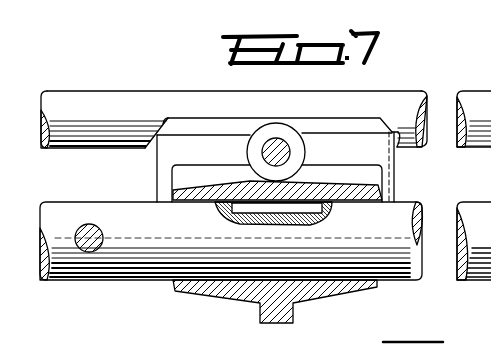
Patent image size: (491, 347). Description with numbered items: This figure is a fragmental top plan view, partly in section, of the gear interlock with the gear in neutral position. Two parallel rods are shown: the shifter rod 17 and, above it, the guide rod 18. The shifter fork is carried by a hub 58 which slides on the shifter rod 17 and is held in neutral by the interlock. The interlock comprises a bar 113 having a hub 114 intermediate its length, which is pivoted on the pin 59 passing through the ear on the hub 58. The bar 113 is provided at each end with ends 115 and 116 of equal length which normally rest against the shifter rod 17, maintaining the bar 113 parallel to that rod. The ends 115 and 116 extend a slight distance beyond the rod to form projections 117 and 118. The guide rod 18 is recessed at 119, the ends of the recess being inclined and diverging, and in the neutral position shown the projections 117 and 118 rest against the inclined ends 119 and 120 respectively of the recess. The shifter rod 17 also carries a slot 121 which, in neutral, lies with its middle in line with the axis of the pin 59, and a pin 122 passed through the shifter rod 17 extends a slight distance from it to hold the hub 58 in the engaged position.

The shifter rod 17 is at (89, 281).
The guide rod 18 is at (67, 97).
The hub 58 is at (330, 290).
The pin 59 is at (278, 142).
The bar 113 is at (343, 143).
The hub 114 is at (263, 133).
The end 115 is at (162, 187).
The end 116 is at (389, 190).
The projection 117 is at (168, 121).
The projection 118 is at (398, 132).
The recess 119 is at (194, 125).
The inclined end of recess 120 is at (398, 148).
The slot 121 is at (245, 211).
The pin 122 is at (90, 252).